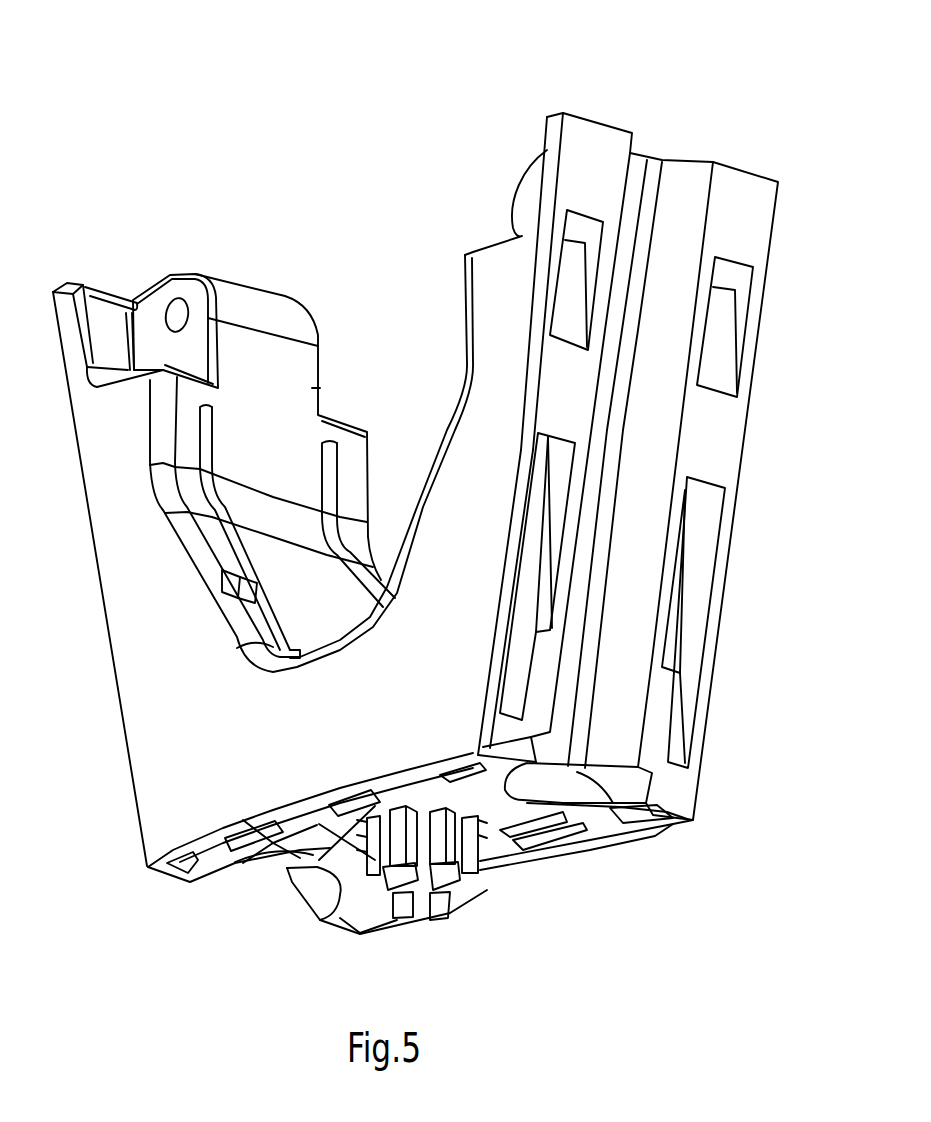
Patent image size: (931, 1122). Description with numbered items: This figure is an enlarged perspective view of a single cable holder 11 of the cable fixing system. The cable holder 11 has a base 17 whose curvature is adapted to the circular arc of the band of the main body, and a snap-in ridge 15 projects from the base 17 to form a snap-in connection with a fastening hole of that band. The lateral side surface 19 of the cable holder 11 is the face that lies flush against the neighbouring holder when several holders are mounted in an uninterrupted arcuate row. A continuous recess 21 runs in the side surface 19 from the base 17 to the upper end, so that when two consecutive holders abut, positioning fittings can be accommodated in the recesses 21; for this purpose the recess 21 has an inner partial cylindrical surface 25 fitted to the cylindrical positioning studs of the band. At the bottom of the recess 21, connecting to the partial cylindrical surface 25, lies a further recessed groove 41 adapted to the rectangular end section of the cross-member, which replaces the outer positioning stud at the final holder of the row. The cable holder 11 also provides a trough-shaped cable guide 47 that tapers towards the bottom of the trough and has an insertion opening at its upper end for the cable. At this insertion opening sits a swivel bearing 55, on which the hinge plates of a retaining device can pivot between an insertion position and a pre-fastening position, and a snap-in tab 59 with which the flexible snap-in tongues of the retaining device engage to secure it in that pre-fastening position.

The cable holder 11 is at (347, 223).
The snap-in ridge 15 is at (478, 898).
The base 17 is at (308, 866).
The side surface 19 is at (722, 431).
The recess 21 is at (250, 865).
The partial cylindrical surface 25 is at (682, 200).
The recessed groove 41 is at (630, 183).
The cable guide 47 is at (303, 587).
The swivel bearing 55 is at (183, 287).
The snap-in tab 59 is at (107, 292).